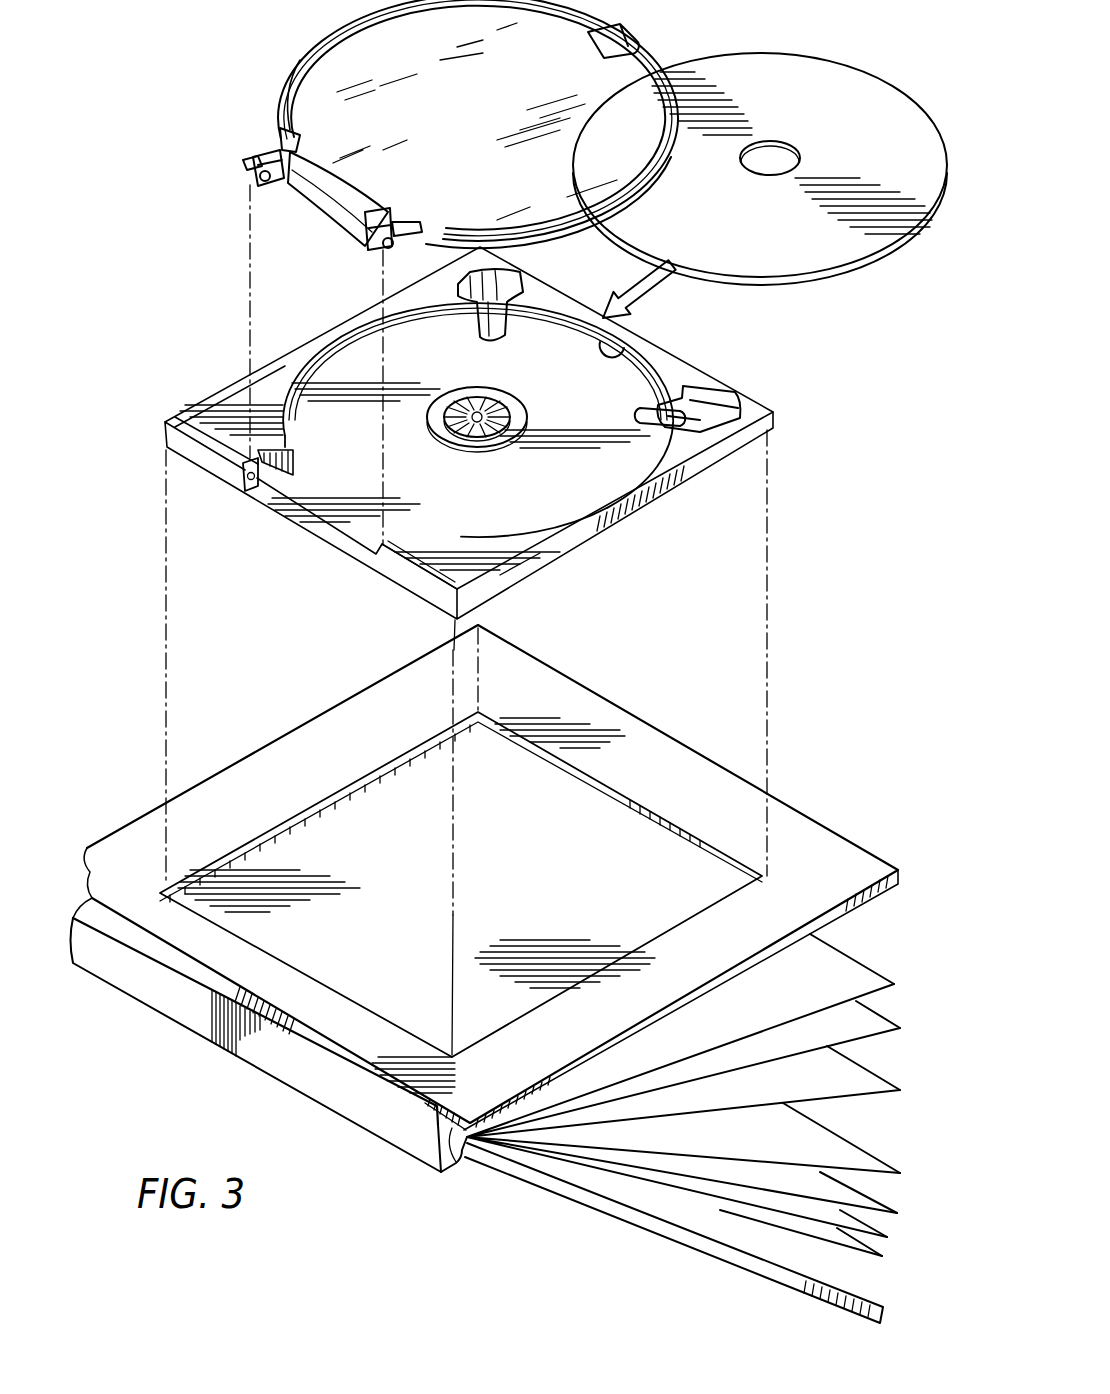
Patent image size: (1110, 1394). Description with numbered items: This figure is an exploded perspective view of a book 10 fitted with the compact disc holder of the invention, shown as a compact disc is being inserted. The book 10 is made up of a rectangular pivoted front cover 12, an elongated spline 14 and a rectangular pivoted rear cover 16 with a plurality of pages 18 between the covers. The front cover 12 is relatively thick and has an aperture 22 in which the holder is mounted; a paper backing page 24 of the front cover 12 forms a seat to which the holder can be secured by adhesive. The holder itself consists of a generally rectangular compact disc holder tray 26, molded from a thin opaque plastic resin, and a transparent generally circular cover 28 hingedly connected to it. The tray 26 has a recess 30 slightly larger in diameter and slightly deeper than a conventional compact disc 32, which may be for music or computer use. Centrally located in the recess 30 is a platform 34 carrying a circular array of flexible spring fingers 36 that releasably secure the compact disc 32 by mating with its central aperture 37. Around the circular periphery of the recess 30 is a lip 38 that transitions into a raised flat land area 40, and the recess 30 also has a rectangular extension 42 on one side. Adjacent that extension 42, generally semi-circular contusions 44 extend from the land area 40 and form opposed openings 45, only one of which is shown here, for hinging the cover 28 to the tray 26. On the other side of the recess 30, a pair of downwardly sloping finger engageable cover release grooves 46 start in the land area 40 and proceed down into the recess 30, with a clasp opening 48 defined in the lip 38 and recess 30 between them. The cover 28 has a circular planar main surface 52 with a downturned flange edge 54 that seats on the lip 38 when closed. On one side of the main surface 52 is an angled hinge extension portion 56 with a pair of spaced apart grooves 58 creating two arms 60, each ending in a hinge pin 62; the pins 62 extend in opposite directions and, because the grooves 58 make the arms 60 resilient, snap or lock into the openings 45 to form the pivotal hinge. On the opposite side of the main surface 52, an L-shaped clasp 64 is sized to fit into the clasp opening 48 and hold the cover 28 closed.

The book 10 is at (498, 974).
The front cover 12 is at (640, 746).
The spline 14 is at (285, 1063).
The rear cover 16 is at (605, 1216).
The pages 18 is at (900, 1030).
The aperture 22 is at (320, 796).
The paper backing page 24 is at (372, 846).
The compact disc holder tray 26 is at (748, 406).
The cover 28 is at (585, 9).
The recess 30 is at (600, 526).
The compact disc 32 is at (866, 106).
The platform 34 is at (478, 449).
The flexible spring fingers 36 is at (505, 409).
The central aperture 37 is at (780, 153).
The lip 38 is at (345, 341).
The raised flat land area 40 is at (515, 561).
The rectangular extension 42 is at (320, 496).
The semi-circular contusions 44 is at (185, 404).
The openings 45 is at (250, 493).
The finger engageable cover release grooves 46 is at (498, 296).
The clasp opening 48 is at (622, 353).
The circular planar main surface 52 is at (462, 110).
The downturned flange edge 54 is at (335, 31).
The angled hinge extension portion 56 is at (330, 216).
The grooves 58 is at (282, 141).
The arms 60 is at (258, 177).
The hinge pins 62 is at (250, 162).
The L-shaped clasp 64 is at (635, 49).